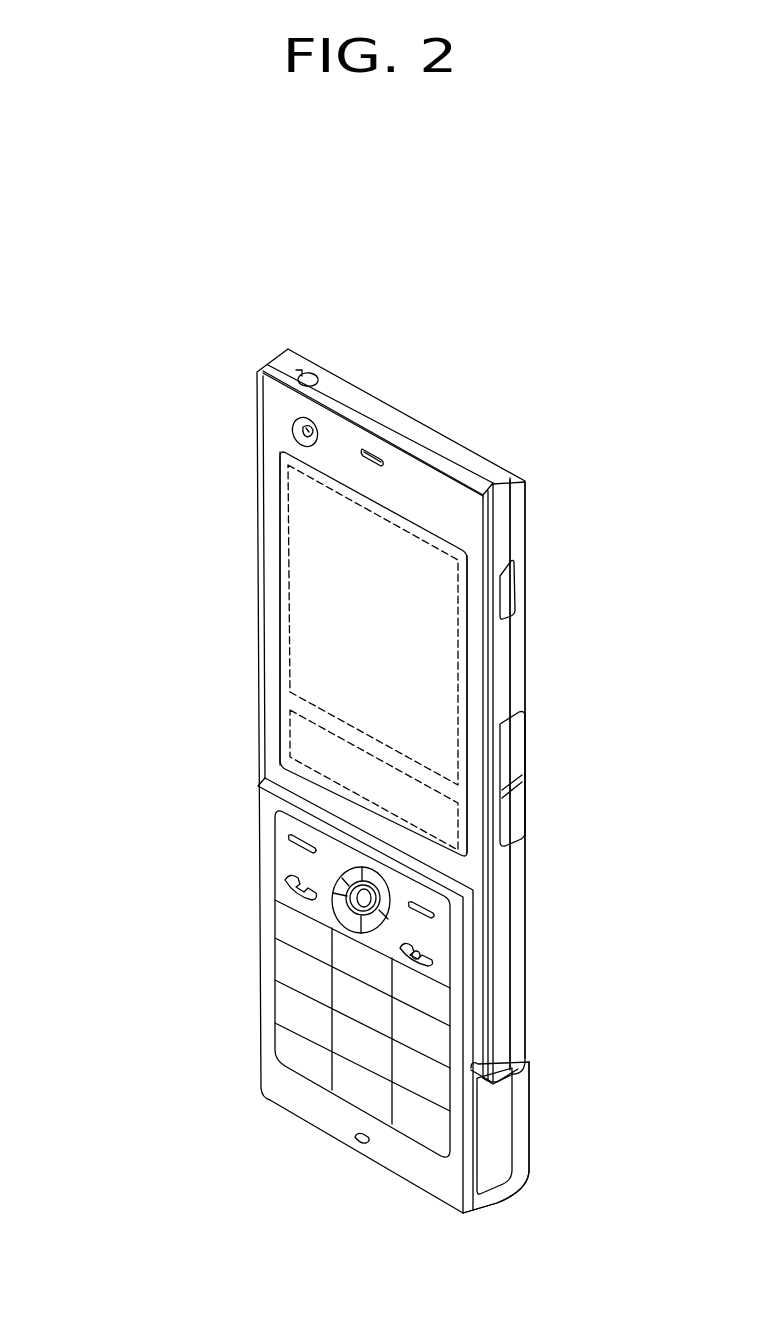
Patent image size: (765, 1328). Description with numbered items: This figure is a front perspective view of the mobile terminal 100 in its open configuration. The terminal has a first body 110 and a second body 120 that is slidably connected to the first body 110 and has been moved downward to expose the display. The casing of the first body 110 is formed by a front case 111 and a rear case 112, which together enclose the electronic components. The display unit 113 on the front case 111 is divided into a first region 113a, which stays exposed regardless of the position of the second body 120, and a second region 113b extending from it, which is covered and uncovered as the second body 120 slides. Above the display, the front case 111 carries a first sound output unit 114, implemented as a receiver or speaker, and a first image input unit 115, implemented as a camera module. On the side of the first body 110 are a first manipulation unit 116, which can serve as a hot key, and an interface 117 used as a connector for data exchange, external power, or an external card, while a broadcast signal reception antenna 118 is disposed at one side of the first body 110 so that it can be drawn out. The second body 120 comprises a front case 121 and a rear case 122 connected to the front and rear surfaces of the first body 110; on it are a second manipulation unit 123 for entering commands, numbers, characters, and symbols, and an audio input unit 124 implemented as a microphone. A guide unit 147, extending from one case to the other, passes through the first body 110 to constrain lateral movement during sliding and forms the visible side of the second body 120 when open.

The mobile terminal 100 is at (126, 370).
The first body 110 is at (243, 484).
The front case 111 is at (432, 457).
The rear case 112 is at (488, 470).
The display unit 113 is at (173, 580).
The first region 113a is at (295, 570).
The second region 113b is at (295, 733).
The first sound output unit 114 is at (376, 452).
The first image input unit 115 is at (296, 430).
The first manipulation unit 116 is at (514, 746).
The interface 117 is at (510, 598).
The broadcast signal reception antenna 118 is at (309, 373).
The second body 120 is at (249, 924).
The front case 121 is at (265, 818).
The rear case 122 is at (527, 1100).
The second manipulation unit 123 is at (283, 957).
The audio input unit 124 is at (358, 1145).
The guide unit 147 is at (507, 1140).